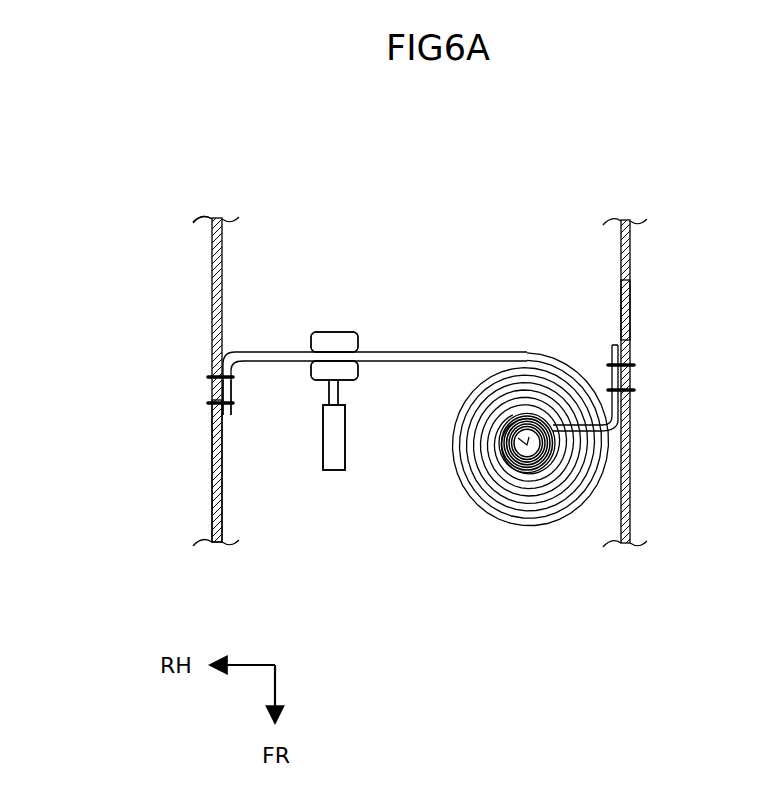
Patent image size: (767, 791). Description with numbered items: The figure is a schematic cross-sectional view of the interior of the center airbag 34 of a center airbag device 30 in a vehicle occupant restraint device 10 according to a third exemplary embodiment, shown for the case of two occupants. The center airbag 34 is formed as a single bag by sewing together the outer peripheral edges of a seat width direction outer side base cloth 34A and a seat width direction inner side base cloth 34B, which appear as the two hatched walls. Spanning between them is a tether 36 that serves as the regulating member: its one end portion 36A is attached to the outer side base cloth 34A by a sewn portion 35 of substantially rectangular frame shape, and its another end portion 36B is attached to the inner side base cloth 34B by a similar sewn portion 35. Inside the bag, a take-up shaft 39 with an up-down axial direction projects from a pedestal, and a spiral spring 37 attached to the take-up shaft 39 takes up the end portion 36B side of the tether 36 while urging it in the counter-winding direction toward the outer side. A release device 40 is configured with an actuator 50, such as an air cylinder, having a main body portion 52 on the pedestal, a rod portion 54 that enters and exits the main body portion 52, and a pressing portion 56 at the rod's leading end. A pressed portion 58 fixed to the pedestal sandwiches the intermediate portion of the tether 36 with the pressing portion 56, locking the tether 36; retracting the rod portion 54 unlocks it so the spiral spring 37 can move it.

The vehicle seat 10 is at (194, 295).
The center airbag device 30 is at (640, 255).
The center airbag 34 is at (206, 255).
The seat width direction outer side base cloth 34A is at (212, 477).
The seat width direction inner side base cloth 34B is at (632, 307).
The sewn portion 35 is at (213, 378).
The tether 36 is at (383, 347).
The one end portion of the tether 36A is at (232, 392).
The another end portion of the tether 36B is at (612, 344).
The spiral spring 37 is at (499, 474).
The take-up shaft 39 is at (540, 474).
The release device 40 is at (354, 484).
The actuator 50 is at (338, 476).
The main body portion 52 is at (324, 471).
The rod portion 54 is at (328, 392).
The pressing portion 56 is at (358, 377).
The pressed portion 58 is at (335, 331).